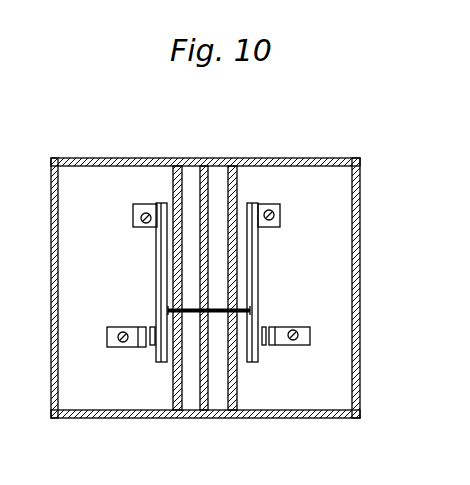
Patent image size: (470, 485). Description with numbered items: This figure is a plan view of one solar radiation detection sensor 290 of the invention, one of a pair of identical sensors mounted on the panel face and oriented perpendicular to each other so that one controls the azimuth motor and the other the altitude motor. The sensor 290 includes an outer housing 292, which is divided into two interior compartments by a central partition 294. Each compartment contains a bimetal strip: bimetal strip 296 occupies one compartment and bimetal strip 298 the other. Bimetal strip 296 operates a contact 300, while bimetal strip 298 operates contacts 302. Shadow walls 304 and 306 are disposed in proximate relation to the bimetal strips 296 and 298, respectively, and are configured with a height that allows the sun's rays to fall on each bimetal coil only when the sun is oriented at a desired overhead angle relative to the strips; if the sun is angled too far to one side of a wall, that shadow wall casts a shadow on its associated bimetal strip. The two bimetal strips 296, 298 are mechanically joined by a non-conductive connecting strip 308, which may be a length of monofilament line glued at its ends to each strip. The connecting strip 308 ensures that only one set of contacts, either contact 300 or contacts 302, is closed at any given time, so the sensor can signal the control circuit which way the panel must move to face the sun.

The solar sensor 290 is at (335, 159).
The outer housing 292 is at (360, 230).
The partition 294 is at (206, 174).
The bimetal strip 296 is at (158, 257).
The bimetal strip 298 is at (258, 260).
The contact 300 is at (147, 349).
The contacts 302 is at (267, 351).
The shadow wall 304 is at (178, 174).
The shadow wall 306 is at (236, 200).
The connecting strip 308 is at (216, 313).